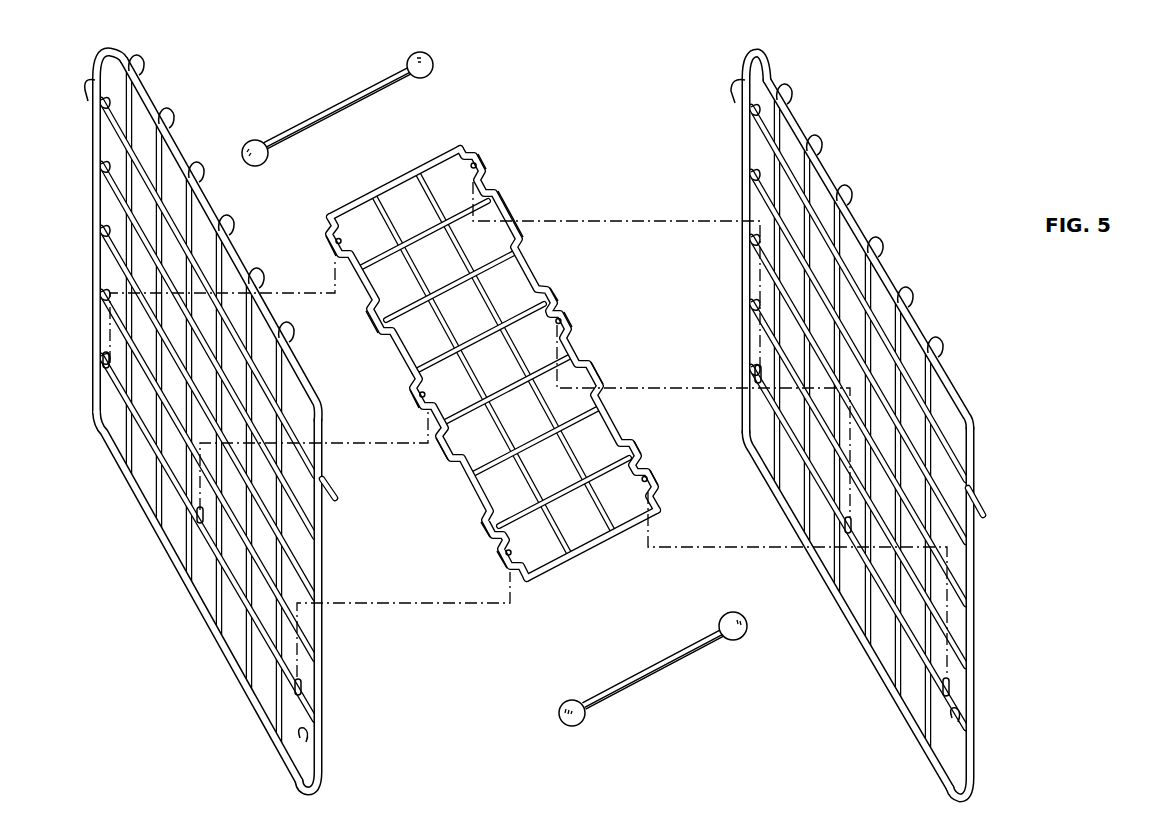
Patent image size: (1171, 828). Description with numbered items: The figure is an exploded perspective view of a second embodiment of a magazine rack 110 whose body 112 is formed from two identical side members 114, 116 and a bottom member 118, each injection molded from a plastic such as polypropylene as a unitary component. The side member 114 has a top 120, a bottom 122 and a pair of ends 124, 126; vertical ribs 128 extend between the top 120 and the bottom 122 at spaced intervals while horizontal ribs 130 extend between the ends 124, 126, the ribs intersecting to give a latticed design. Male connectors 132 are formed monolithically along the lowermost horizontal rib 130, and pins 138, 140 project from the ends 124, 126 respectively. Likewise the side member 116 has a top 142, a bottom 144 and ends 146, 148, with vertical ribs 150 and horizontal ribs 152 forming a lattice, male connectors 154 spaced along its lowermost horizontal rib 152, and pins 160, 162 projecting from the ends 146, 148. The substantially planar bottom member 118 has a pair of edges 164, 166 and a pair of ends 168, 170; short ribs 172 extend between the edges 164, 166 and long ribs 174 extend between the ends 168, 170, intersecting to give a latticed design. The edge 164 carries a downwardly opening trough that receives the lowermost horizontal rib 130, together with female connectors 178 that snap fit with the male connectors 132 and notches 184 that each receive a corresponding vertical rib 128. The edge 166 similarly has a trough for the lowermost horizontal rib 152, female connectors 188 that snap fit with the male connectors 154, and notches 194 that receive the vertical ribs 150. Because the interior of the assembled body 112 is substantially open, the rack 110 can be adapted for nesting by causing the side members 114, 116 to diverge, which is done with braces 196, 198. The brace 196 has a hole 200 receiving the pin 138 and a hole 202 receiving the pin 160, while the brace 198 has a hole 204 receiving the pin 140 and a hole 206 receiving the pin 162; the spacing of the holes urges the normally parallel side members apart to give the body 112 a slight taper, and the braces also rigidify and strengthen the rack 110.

The magazine rack 110 is at (677, 676).
The body 112 is at (976, 396).
The side member 114 is at (322, 792).
The side member 116 is at (758, 46).
The bottom member 118 is at (621, 537).
The top 120 is at (214, 220).
The bottom 122 is at (200, 606).
The end 124 is at (322, 652).
The end 126 is at (93, 205).
The vertical ribs 128 is at (151, 124).
The horizontal ribs 130 is at (101, 106).
The male connectors 132 is at (104, 352).
The pin 138 is at (338, 496).
The pin 140 is at (93, 80).
The top 142 is at (858, 214).
The bottom 144 is at (912, 733).
The end 146 is at (974, 580).
The end 148 is at (744, 178).
The vertical ribs 150 is at (806, 152).
The horizontal ribs 152 is at (746, 118).
The male connectors 154 is at (752, 376).
The pin 160 is at (983, 502).
The pin 162 is at (736, 92).
The edge 164 is at (398, 360).
The edge 166 is at (536, 280).
The end 168 is at (571, 558).
The end 170 is at (377, 194).
The short ribs 172 is at (446, 287).
The long ribs 174 is at (482, 289).
The female connectors 178 is at (336, 246).
The notches 184 is at (326, 234).
The female connectors 188 is at (476, 166).
The notches 194 is at (461, 149).
The brace 196 is at (650, 670).
The brace 198 is at (336, 106).
The hole 200 is at (580, 725).
The hole 202 is at (737, 638).
The hole 204 is at (267, 160).
The hole 206 is at (431, 72).